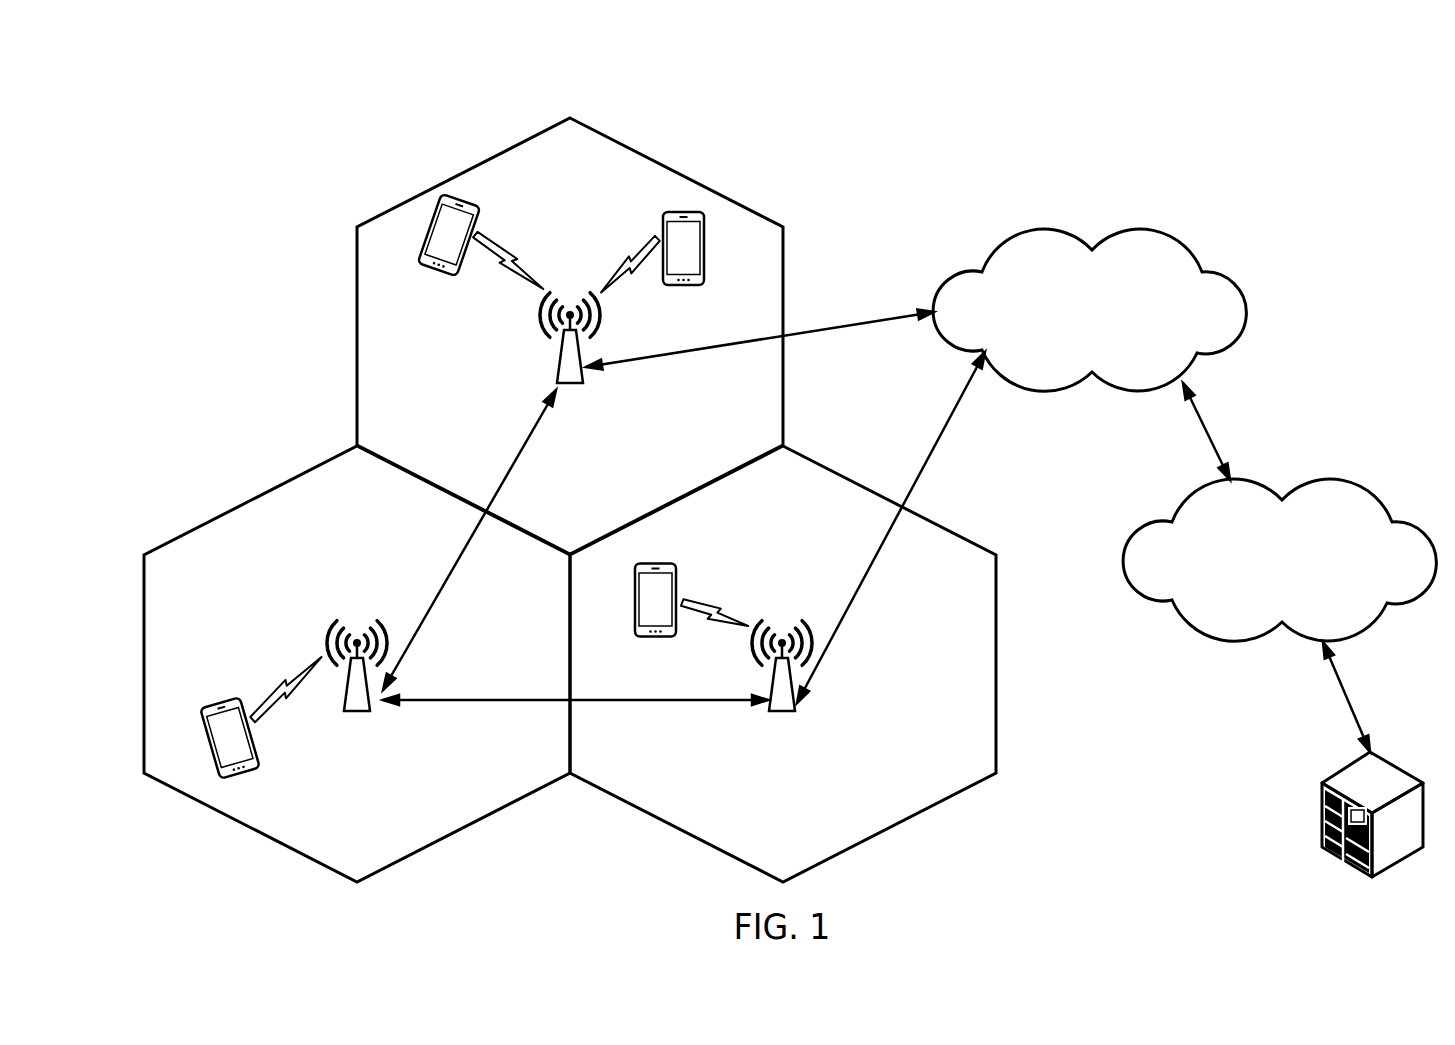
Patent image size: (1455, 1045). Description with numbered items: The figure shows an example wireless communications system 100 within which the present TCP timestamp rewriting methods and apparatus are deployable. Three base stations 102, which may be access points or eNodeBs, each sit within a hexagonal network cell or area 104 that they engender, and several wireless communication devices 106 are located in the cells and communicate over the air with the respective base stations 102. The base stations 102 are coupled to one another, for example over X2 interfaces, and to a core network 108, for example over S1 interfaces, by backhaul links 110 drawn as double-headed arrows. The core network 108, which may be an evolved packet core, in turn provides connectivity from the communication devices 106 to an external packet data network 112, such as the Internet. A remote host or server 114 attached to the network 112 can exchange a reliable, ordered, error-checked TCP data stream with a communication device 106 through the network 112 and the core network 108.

The wireless communications system 100 is at (158, 70).
The base station 102 is at (556, 371).
The network cell 104 is at (509, 148).
The wireless communication device 106 is at (433, 270).
The core network 108 is at (1148, 232).
The backhaul link 110 is at (885, 318).
The network 112 is at (1330, 482).
The server 114 is at (1394, 762).